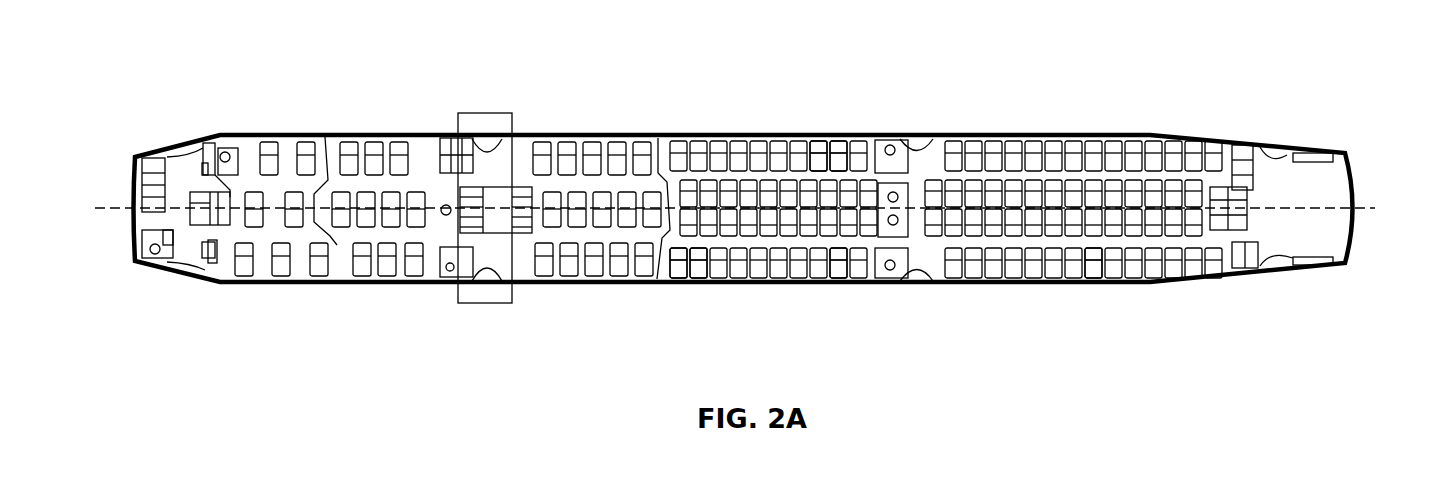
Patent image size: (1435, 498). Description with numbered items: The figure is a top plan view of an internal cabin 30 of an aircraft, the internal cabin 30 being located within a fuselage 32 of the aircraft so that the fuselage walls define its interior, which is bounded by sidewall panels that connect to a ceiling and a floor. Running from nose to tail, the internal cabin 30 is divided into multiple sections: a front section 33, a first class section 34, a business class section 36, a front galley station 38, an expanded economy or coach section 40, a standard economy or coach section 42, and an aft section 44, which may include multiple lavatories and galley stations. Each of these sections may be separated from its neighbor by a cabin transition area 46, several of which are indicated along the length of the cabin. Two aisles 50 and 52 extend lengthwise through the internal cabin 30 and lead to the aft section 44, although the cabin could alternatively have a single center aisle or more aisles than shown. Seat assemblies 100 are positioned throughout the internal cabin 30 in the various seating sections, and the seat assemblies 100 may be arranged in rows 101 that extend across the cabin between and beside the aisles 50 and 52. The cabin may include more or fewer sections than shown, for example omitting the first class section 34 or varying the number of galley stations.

The internal cabin 30 is at (275, 40).
The fuselage 32 is at (606, 96).
The front section 33 is at (194, 296).
The first class section 34 is at (290, 283).
The business class section 36 is at (363, 135).
The front galley station 38 is at (486, 300).
The expanded economy or coach section 40 is at (583, 285).
The standard economy or coach section 42 is at (716, 134).
The aft section 44 is at (1282, 165).
The cabin transition area 46 is at (210, 137).
The aisle 50 is at (1077, 182).
The aisle 52 is at (1095, 243).
The seat assembly 100 is at (839, 148).
The row 101 is at (833, 132).